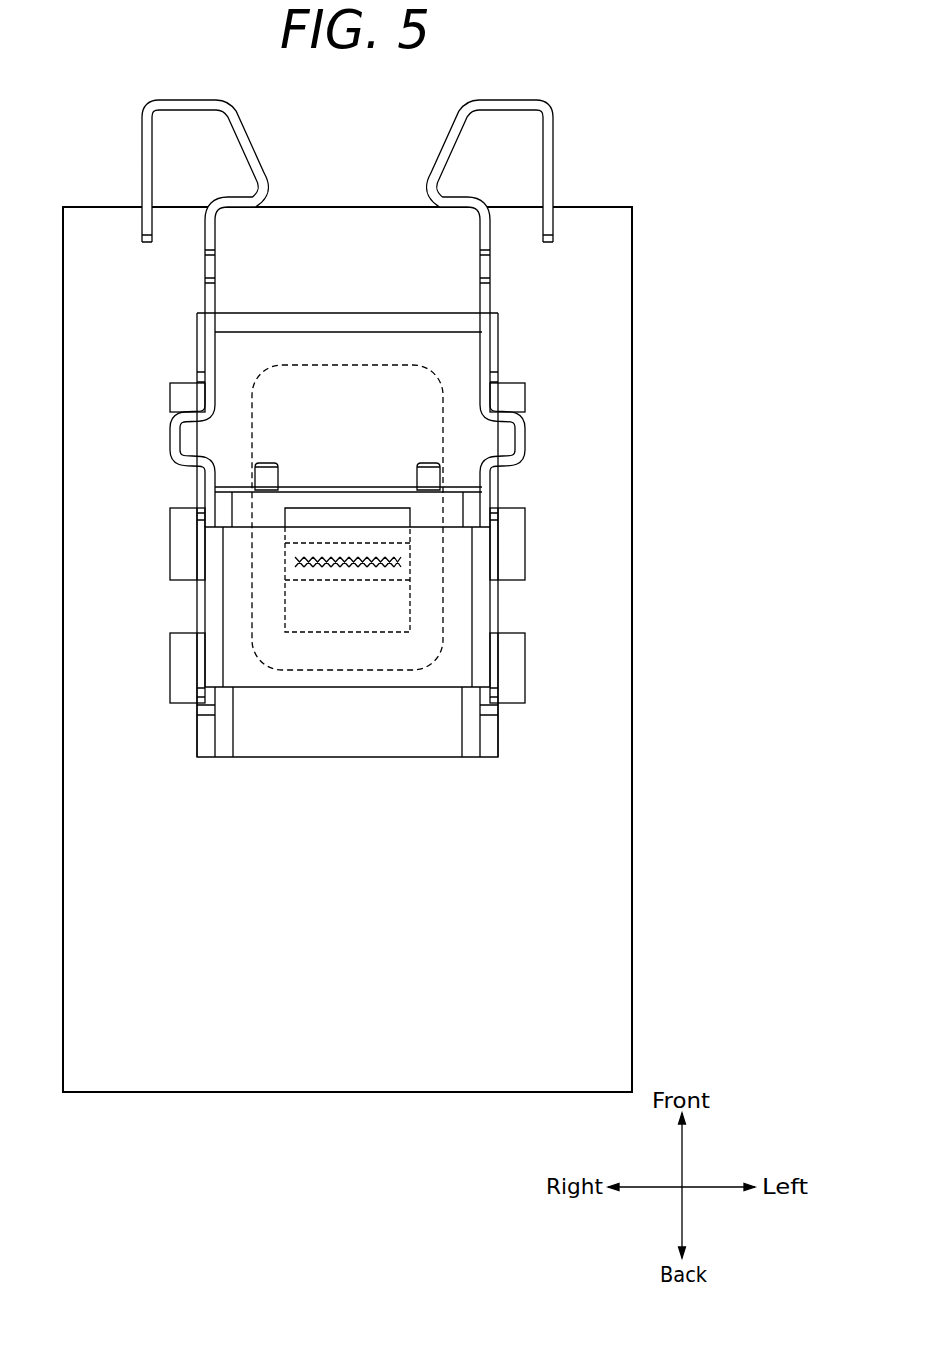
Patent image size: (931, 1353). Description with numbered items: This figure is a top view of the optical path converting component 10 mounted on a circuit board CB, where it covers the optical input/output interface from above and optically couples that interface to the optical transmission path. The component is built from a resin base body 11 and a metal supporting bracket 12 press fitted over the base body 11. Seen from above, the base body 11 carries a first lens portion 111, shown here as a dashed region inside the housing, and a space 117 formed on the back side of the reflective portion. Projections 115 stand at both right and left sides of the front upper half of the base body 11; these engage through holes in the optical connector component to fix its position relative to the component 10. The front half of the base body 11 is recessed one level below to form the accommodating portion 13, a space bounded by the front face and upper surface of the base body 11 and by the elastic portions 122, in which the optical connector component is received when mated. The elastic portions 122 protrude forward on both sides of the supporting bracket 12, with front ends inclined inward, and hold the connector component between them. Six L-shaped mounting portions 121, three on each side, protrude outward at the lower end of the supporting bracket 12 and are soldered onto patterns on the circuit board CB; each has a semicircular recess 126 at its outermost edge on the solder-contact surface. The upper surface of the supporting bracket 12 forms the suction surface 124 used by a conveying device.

The optical path converting component 10 is at (606, 494).
The base body 11 is at (418, 745).
The supporting bracket 12 is at (343, 675).
The accommodating portion 13 is at (390, 385).
The first lens portion 111 is at (353, 553).
The projection 115 is at (265, 477).
The space 117 is at (367, 603).
The mounting portion 121 is at (186, 395).
The elastic portion 122 is at (207, 264).
The suction surface 124 is at (245, 675).
The recess 126 is at (184, 548).
The circuit board CB is at (612, 777).